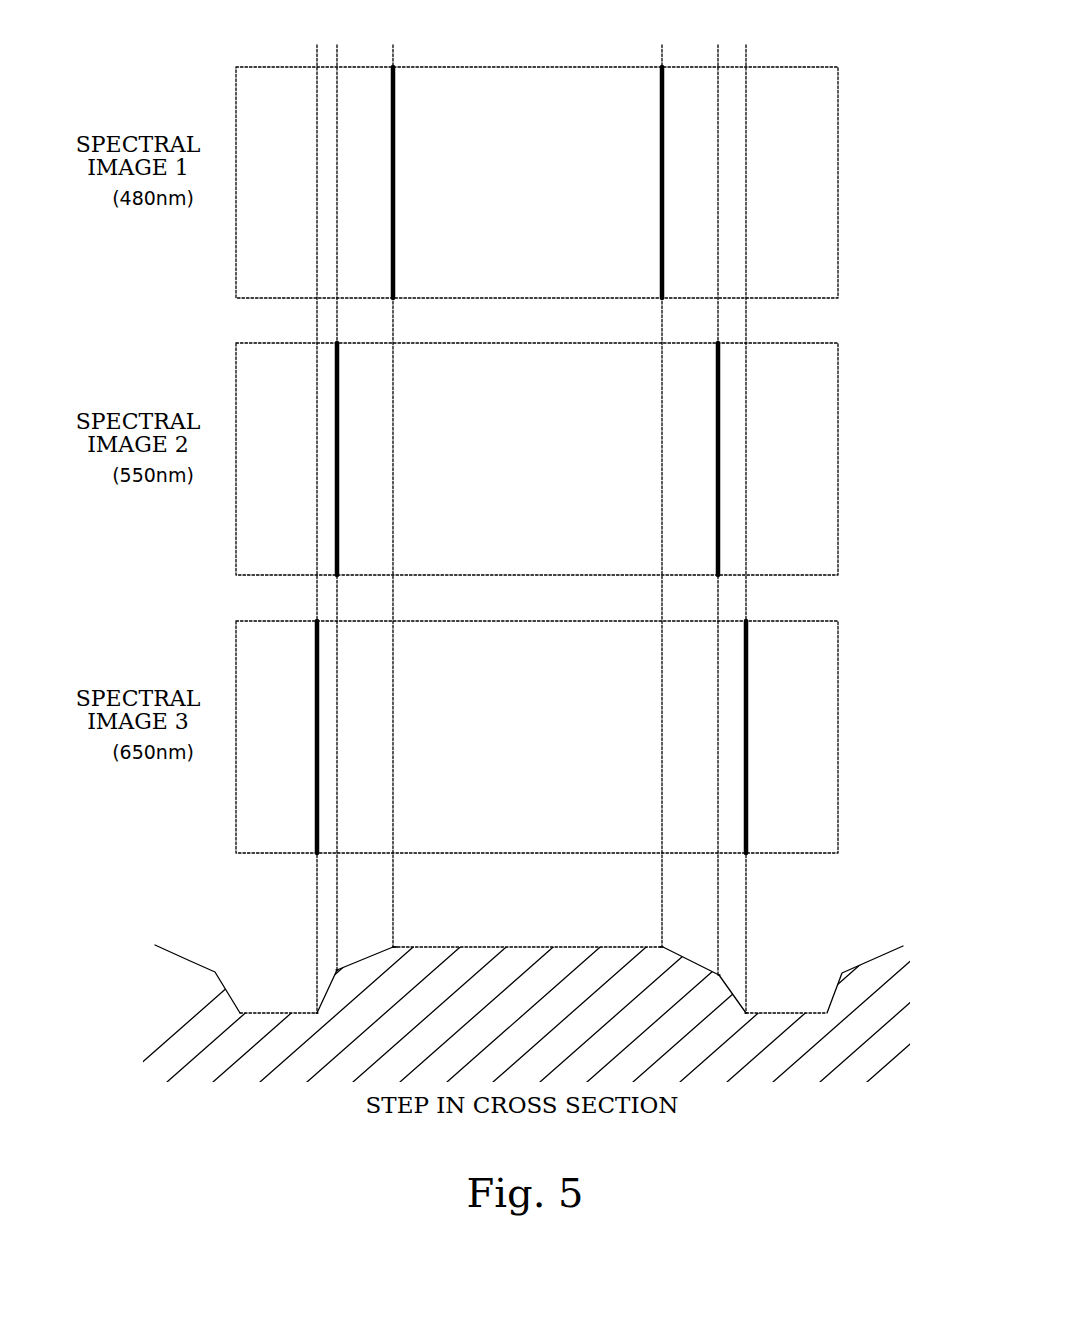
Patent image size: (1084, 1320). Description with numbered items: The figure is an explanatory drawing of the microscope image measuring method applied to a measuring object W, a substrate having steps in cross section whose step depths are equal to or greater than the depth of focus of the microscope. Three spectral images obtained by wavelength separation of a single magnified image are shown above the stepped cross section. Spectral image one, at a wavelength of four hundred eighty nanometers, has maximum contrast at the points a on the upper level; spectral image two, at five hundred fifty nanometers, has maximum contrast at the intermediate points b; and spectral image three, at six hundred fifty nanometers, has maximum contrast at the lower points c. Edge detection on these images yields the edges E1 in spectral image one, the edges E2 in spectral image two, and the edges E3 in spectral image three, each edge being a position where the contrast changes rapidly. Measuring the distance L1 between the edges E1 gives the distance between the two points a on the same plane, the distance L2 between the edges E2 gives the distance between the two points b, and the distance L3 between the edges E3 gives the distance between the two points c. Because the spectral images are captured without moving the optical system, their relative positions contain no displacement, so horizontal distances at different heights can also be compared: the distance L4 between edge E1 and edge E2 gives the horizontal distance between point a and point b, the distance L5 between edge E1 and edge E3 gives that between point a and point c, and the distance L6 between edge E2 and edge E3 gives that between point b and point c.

The edges E1 is at (396, 98).
The edges E2 is at (341, 520).
The edges E3 is at (321, 811).
The distance L1 is at (659, 136).
The distance L2 is at (715, 413).
The distance L3 is at (743, 690).
The distance L4 is at (392, 331).
The distance L5 is at (392, 608).
The distance L6 is at (360, 887).
The point a is at (394, 946).
The point b is at (338, 969).
The point c is at (317, 1012).
The measuring object W is at (843, 935).